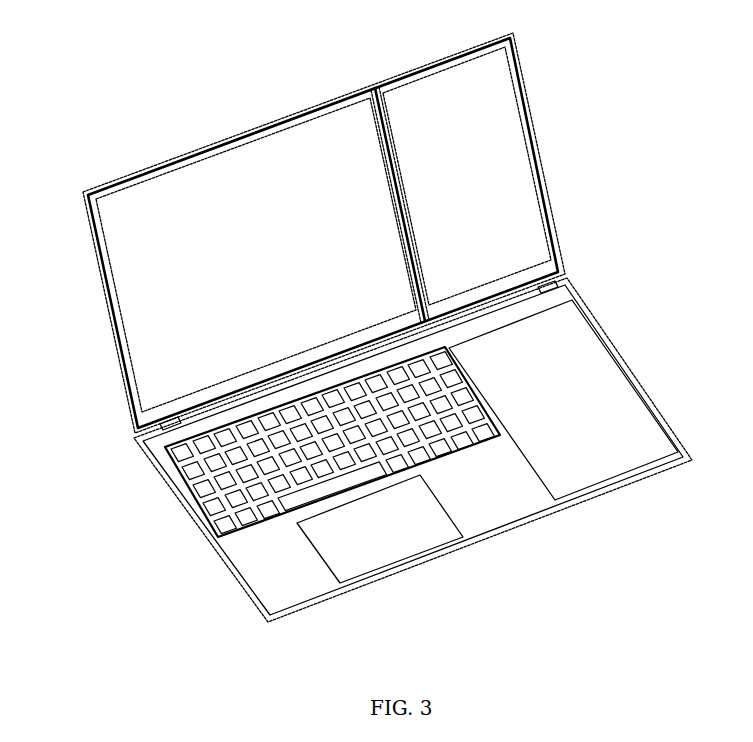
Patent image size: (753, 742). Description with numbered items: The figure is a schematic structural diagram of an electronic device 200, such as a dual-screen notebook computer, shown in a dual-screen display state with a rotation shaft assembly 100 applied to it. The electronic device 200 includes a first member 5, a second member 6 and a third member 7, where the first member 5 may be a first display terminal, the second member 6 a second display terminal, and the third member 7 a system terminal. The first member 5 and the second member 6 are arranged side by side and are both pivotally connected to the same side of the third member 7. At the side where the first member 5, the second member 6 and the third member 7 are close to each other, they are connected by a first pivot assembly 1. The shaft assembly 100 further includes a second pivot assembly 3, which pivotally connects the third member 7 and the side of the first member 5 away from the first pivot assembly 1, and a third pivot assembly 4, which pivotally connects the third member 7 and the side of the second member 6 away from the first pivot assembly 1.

The electronic device 200 is at (308, 233).
The rotation shaft assembly 100 is at (358, 450).
The first pivot assembly 1 is at (400, 449).
The second pivot assembly 3 is at (320, 398).
The third pivot assembly 4 is at (321, 468).
The first member 5 is at (256, 255).
The second member 6 is at (458, 176).
The third member 7 is at (563, 433).